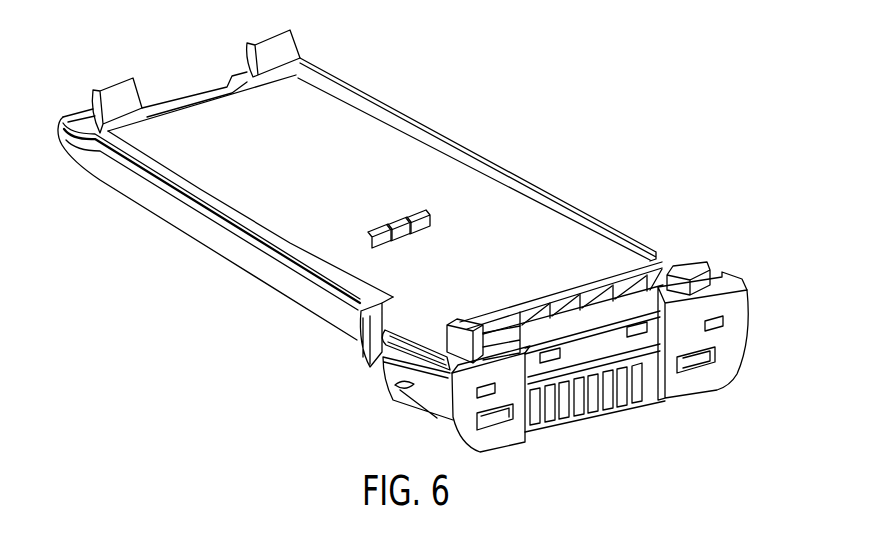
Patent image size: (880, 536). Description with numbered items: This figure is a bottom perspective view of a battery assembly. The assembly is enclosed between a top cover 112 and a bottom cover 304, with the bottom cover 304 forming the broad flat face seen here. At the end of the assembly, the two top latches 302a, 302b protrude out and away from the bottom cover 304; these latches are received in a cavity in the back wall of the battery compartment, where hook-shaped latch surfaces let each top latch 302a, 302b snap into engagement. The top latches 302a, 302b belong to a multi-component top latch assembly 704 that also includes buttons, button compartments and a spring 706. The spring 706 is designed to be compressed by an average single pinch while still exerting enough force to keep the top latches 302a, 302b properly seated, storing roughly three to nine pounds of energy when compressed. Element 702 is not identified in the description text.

The top cover 112 is at (368, 83).
The bottom cover 304 is at (527, 218).
The top latch 302a is at (690, 266).
The top latch 302b is at (466, 337).
The slot 702 is at (692, 360).
The top latch assembly 704 is at (488, 424).
The spring 706 is at (640, 409).